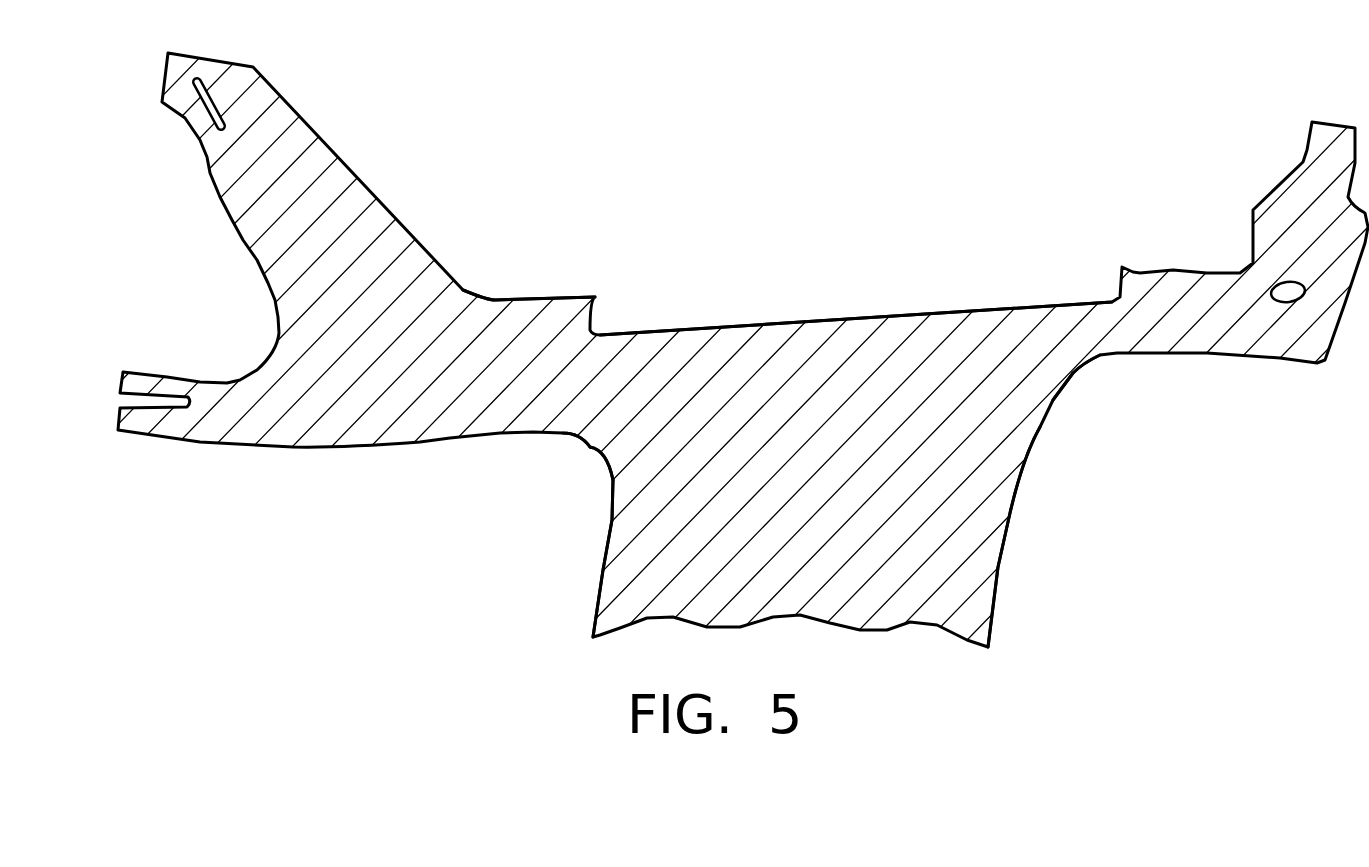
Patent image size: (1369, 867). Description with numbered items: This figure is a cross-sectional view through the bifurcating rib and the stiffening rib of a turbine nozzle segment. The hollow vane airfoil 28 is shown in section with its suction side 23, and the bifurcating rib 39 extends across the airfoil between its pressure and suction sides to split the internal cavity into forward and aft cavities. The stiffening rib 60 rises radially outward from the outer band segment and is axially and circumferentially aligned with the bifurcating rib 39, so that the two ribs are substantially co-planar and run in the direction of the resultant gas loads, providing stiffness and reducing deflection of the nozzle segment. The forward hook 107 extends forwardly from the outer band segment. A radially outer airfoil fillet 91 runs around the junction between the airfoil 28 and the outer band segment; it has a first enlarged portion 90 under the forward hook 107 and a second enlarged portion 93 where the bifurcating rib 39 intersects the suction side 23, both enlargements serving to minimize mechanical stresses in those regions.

The forward hook 107 is at (205, 270).
The stiffening rib 60 is at (535, 298).
The bifurcating rib 39 is at (867, 317).
The second enlarged portion 93 is at (1075, 370).
The first enlarged portion 90 is at (1067, 377).
The radially outer airfoil fillet 91 is at (590, 449).
The hollow vane airfoil 28 is at (605, 545).
The suction side 23 is at (1000, 582).